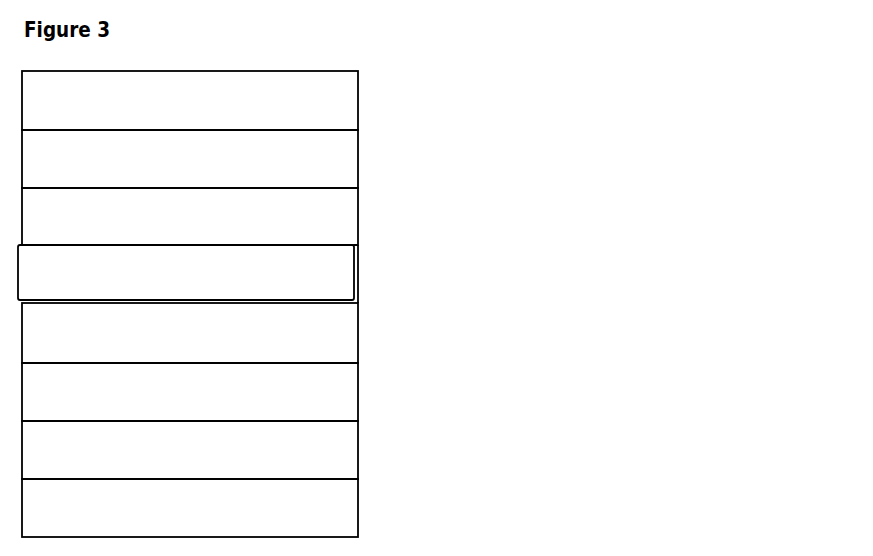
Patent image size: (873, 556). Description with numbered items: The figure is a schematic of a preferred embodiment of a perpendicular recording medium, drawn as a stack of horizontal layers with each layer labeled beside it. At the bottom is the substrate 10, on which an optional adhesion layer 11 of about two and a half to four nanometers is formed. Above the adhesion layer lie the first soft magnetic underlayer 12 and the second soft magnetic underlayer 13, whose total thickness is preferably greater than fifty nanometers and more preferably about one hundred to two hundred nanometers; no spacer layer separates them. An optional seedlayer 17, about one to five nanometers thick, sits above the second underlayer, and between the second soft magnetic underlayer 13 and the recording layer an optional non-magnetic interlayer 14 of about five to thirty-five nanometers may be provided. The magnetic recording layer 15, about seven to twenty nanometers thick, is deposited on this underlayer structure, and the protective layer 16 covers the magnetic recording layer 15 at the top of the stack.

The substrate 10 is at (256, 508).
The adhesion layer 11 is at (337, 450).
The first soft magnetic underlayer 12 is at (359, 392).
The second soft magnetic underlayer 13 is at (373, 333).
The interlayer 14 is at (427, 216).
The magnetic recording layer 15 is at (337, 159).
The protective layer 16 is at (293, 100).
The seedlayer 17 is at (313, 272).